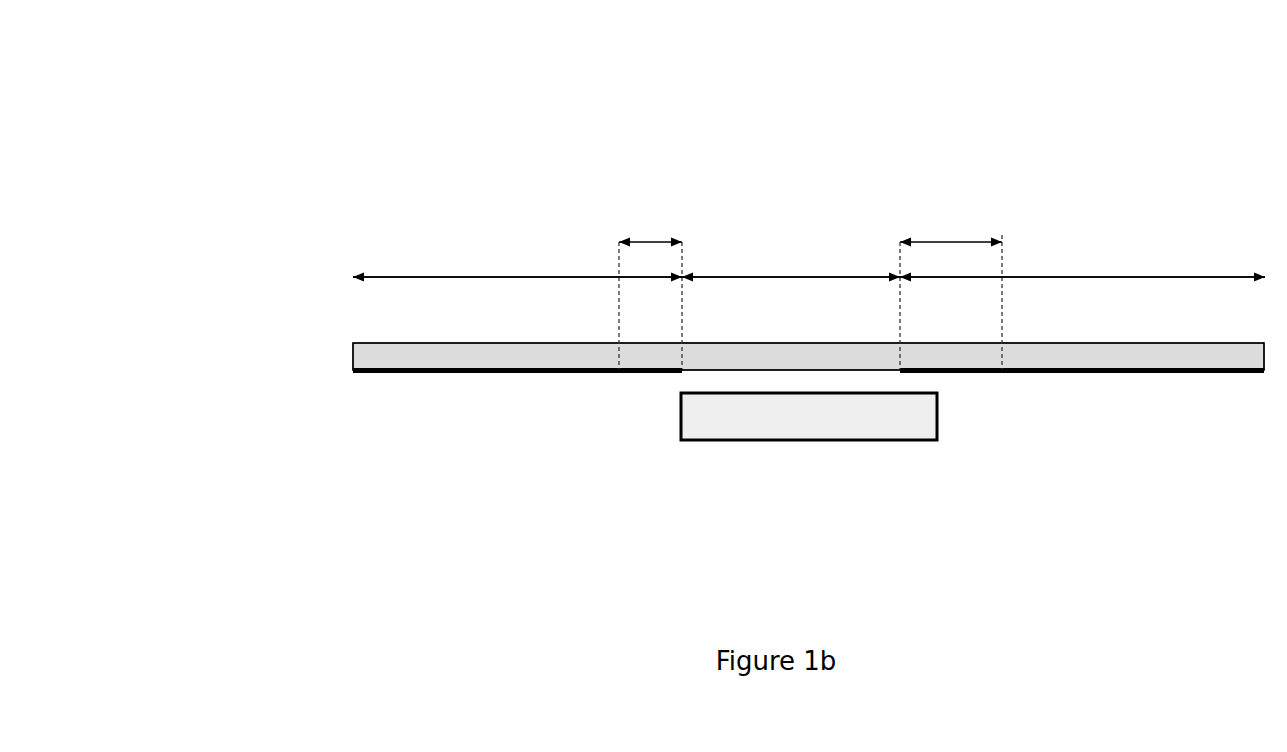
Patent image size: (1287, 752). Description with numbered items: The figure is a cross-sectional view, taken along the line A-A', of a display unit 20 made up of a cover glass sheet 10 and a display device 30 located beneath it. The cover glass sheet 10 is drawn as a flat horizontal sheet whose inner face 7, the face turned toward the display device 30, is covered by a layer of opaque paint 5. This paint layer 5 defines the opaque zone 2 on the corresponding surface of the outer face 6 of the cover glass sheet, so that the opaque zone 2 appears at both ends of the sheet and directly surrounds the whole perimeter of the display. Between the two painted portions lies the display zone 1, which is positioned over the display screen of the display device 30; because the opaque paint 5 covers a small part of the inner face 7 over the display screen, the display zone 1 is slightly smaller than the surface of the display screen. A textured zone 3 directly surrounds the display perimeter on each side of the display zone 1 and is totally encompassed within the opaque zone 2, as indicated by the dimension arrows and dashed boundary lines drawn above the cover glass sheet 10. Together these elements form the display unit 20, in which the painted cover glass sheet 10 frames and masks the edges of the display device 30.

The display zone 1 is at (798, 272).
The opaque zone 2 is at (478, 272).
The textured zone 3 is at (652, 233).
The layer of opaque paint 5 is at (590, 375).
The outer face of the cover glass sheet 6 is at (367, 333).
The inner face of the cover glass sheet 7 is at (400, 382).
The cover glass sheet 10 is at (332, 362).
The display unit 20 is at (533, 173).
The display device 30 is at (890, 458).